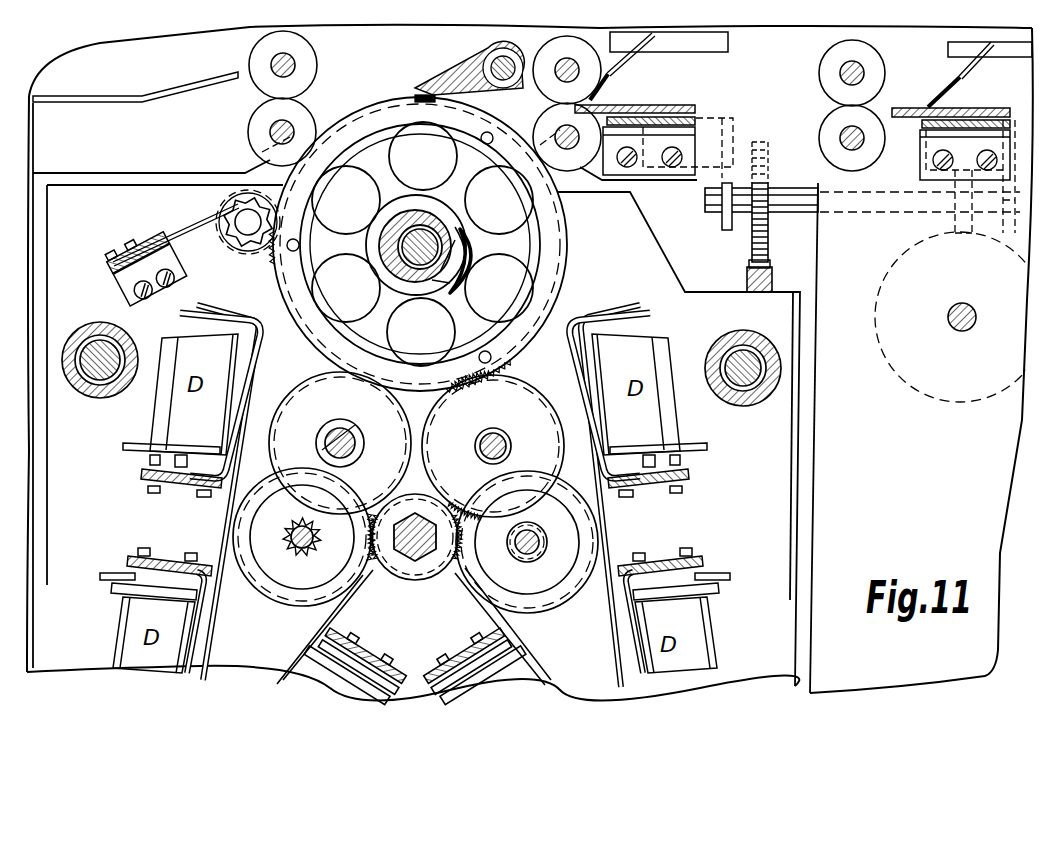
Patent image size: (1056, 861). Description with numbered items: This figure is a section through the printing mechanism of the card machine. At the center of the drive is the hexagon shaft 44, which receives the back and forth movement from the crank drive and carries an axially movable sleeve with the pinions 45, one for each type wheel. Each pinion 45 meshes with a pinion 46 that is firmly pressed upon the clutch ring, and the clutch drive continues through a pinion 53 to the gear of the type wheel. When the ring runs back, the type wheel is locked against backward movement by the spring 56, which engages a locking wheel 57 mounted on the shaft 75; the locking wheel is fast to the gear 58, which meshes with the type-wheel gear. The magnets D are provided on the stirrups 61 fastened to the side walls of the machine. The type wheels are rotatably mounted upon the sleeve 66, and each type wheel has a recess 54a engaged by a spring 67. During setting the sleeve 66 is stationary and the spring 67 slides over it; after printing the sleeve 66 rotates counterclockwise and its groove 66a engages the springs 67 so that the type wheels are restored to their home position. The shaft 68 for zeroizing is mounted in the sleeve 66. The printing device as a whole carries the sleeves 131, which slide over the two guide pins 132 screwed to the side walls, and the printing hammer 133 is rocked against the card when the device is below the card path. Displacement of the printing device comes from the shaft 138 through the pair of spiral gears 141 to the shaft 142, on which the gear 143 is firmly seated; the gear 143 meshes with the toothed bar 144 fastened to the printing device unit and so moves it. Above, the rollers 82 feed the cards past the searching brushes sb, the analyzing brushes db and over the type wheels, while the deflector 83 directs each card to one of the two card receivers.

The hexagon shaft 44 is at (415, 565).
The pinion 45 is at (430, 567).
The pinion 46 is at (267, 588).
The pinion 53 is at (305, 403).
The recess 54a is at (462, 236).
The spring 56 is at (190, 229).
The locking wheel 57 is at (245, 243).
The gear 58 is at (257, 250).
The stirrups 61 is at (130, 558).
The sleeve 66 is at (405, 273).
The groove 66a is at (450, 237).
The spring 67 is at (477, 257).
The shaft 68 is at (412, 248).
The shaft 75 is at (246, 223).
The rollers 82 is at (258, 127).
The deflector 83 is at (112, 98).
The sleeves 131 is at (90, 390).
The guide pins 132 is at (90, 352).
The printing hammer 133 is at (463, 75).
The shaft 138 is at (958, 332).
The pair of spiral gears 141 is at (943, 255).
The shaft 142 is at (850, 203).
The gear 143 is at (760, 250).
The toothed bar 144 is at (747, 283).
The analyzing brushes db is at (627, 63).
The searching brushes sb is at (967, 73).